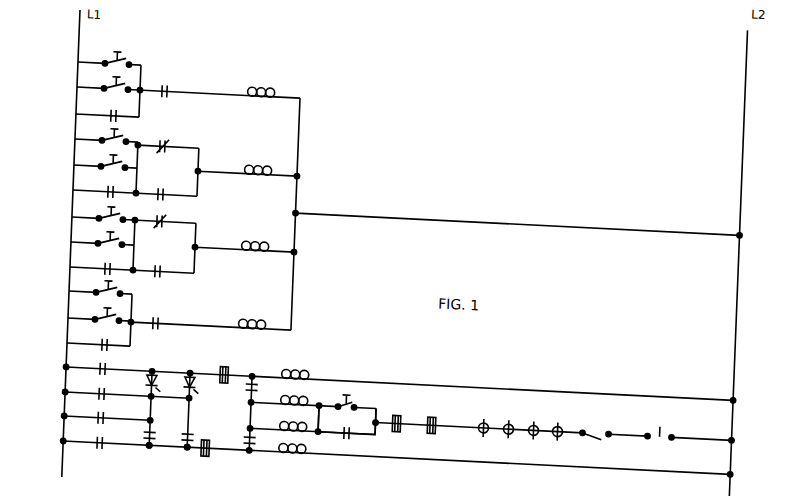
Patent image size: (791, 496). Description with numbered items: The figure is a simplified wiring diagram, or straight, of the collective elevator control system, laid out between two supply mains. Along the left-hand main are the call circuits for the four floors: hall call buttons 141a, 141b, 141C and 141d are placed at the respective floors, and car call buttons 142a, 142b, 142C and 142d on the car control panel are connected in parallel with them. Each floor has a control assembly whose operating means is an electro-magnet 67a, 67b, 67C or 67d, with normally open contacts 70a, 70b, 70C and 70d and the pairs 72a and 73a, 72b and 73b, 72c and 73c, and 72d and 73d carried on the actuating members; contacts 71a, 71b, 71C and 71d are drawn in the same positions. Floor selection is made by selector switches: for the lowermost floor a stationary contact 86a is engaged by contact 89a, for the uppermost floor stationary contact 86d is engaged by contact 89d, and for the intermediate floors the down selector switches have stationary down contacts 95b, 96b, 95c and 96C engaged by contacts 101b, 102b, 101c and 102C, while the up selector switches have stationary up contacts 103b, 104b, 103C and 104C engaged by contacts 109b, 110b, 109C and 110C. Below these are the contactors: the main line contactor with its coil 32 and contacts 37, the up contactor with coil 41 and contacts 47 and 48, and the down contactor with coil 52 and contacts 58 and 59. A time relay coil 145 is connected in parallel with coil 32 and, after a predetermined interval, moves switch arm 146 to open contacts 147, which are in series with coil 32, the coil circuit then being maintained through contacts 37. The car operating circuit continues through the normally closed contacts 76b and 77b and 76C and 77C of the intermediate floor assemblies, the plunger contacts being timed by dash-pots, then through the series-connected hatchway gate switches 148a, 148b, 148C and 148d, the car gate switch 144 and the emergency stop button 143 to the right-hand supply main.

The hall call button 141d is at (110, 56).
The car call button 142d is at (110, 82).
The relay contact 71d is at (99, 112).
The normally open contact 70d is at (121, 114).
The stationary contact 86d is at (164, 86).
The contact 89d is at (174, 74).
The electro-magnet 67d is at (251, 82).
The hall call button 141C is at (110, 133).
The car call button 142C is at (110, 160).
The relay contact 71C is at (76, 189).
The normally open contact 70C is at (118, 197).
The stationary up contact 104C is at (175, 146).
The contact 110C is at (163, 146).
The contact 102C is at (172, 187).
The stationary down contact 96C is at (172, 189).
The electro-magnet 67C is at (252, 162).
The hall call button 141b is at (110, 211).
The car call button 142b is at (110, 237).
The relay contact 71b is at (71, 264).
The normally open contact 70b is at (118, 273).
The stationary up contact 104b is at (162, 218).
The contact 110b is at (166, 214).
The contact 102b is at (164, 259).
The stationary down contact 96b is at (172, 266).
The electro-magnet 67b is at (252, 238).
The hall call button 141a is at (110, 286).
The car call button 142a is at (110, 313).
The relay contact 71a is at (93, 338).
The normally open contact 70a is at (121, 343).
The stationary contact 86a is at (164, 318).
The contact 89a is at (167, 308).
The electro-magnet 67a is at (252, 314).
The contact 72d is at (103, 375).
The normally open contact 73d is at (112, 371).
The contact 72c is at (103, 400).
The normally open contact 73c is at (112, 396).
The contact 72b is at (101, 425).
The normally open contact 73b is at (112, 421).
The contact 72a is at (101, 453).
The normally open contact 73a is at (112, 446).
The stationary up contact 103b is at (159, 372).
The contact 109b is at (171, 378).
The stationary up contact 103C is at (207, 375).
The contact 109C is at (208, 382).
The stationary down contact 95b is at (167, 428).
The stationary down contact 95c is at (206, 429).
The contact 101b is at (166, 444).
The contact 101c is at (204, 444).
The pair of contacts 58 is at (238, 358).
The pair of contacts 47 is at (226, 449).
The pair of contacts 48 is at (267, 372).
The pair of contacts 59 is at (271, 429).
The electro-magnetic coil 41 is at (300, 360).
The electro-magnetic coil 32 is at (316, 388).
The time relay coil 145 is at (306, 414).
The electro-magnetic coil 52 is at (292, 445).
The contacts 147 is at (362, 416).
The switch arm 146 is at (358, 392).
The pair of contacts 37 is at (362, 424).
The plunger contact 77b is at (405, 418).
The contact 76b is at (412, 416).
The plunger contact 77C is at (448, 421).
The contact 76C is at (448, 416).
The hatchway gate switch 148d is at (499, 402).
The hatchway gate switch 148C is at (524, 402).
The hatchway gate switch 148b is at (549, 402).
The hatchway gate switch 148a is at (573, 402).
The car gate switch 144 is at (606, 404).
The emergency stop button 143 is at (672, 405).